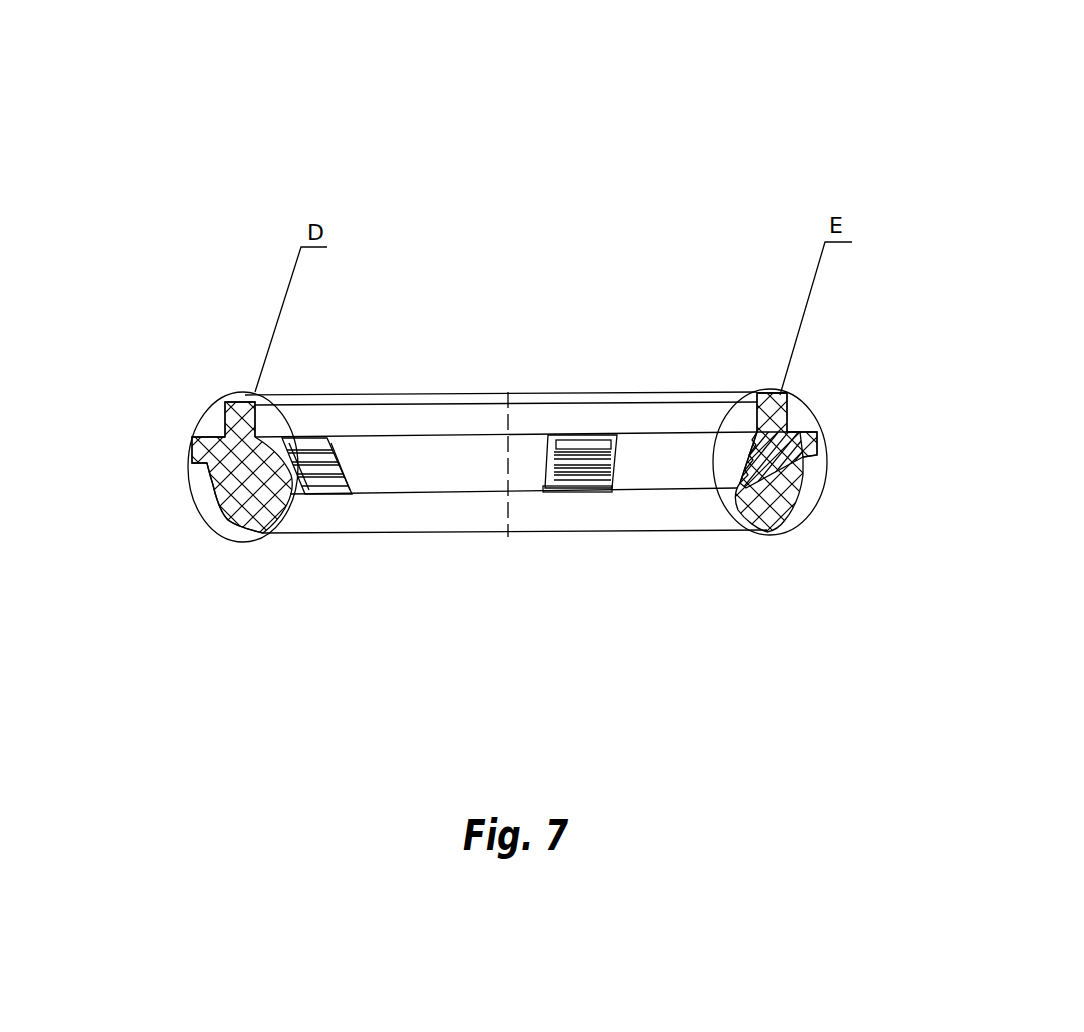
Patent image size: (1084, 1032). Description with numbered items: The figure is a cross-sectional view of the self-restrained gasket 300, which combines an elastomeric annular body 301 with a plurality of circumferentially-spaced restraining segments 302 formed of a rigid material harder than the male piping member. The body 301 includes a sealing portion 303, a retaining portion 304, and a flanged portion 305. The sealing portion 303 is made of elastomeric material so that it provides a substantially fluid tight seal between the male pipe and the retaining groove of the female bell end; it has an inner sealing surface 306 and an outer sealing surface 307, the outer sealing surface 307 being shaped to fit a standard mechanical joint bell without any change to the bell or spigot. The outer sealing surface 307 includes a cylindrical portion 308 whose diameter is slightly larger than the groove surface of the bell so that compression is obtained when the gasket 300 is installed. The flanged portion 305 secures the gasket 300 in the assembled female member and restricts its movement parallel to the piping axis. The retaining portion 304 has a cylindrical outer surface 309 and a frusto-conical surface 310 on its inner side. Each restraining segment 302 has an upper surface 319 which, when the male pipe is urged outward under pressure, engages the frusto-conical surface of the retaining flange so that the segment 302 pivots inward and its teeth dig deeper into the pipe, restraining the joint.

The self-restrained gasket 300 is at (747, 106).
The annular body 301 is at (233, 457).
The restraining segments 302 is at (313, 458).
The sealing portion 303 is at (772, 507).
The retaining portion 304 is at (788, 396).
The flanged portion 305 is at (191, 437).
The inner sealing surface 306 is at (488, 472).
The outer sealing surface 307 is at (228, 522).
The cylindrical portion 308 is at (207, 478).
The cylindrical outer surface 309 is at (222, 409).
The frusto-conical surface 310 is at (764, 387).
The upper surface 319 is at (816, 423).